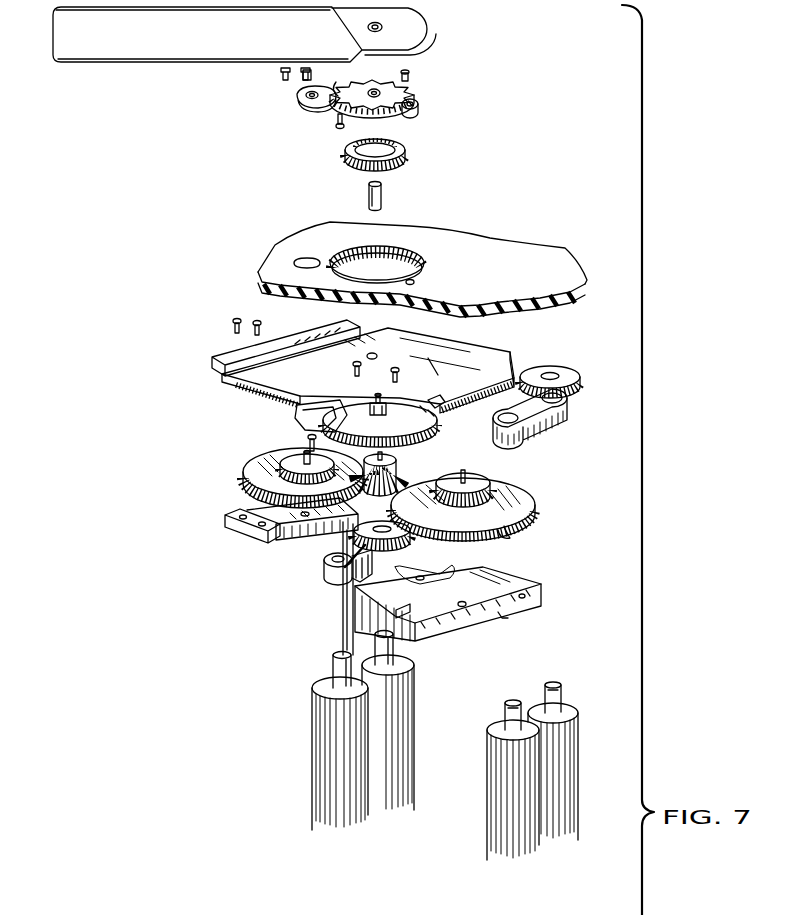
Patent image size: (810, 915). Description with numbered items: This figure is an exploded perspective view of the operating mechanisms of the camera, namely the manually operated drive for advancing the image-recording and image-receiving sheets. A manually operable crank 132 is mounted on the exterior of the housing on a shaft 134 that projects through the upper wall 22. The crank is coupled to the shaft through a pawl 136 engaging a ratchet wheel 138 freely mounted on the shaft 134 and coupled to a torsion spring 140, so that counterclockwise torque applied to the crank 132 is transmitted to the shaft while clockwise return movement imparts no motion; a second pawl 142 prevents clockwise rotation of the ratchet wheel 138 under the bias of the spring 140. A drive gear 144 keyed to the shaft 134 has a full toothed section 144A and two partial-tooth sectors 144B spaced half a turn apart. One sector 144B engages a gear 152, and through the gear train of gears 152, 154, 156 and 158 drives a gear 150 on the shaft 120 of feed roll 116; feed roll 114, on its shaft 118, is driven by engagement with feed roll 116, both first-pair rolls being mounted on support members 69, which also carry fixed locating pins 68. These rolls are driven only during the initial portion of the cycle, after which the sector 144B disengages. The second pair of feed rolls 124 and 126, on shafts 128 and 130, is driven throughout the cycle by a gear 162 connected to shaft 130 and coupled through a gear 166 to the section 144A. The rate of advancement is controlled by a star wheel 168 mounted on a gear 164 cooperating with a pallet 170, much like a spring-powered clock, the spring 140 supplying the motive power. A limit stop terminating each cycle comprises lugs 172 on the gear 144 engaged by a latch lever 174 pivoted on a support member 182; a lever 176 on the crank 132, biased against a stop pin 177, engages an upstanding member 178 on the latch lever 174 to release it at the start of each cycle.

The upper wall 22 is at (521, 257).
The locating pins 68 is at (367, 573).
The support member 69 is at (340, 568).
The feed roll 114 is at (322, 800).
The feed roll 116 is at (414, 770).
The shaft 118 is at (333, 655).
The shaft 120 is at (380, 637).
The feed roll 124 is at (501, 812).
The feed roll 126 is at (556, 792).
The shaft 128 is at (509, 700).
The shaft 130 is at (553, 683).
The crank 132 is at (108, 64).
The shaft 134 is at (385, 196).
The pawl 136 is at (340, 76).
The ratchet wheel 138 is at (397, 95).
The torsion spring 140 is at (405, 160).
The second pawl 142 is at (420, 115).
The drive gear 144 is at (436, 424).
The 360° section 144A is at (312, 447).
The sectors 144B is at (430, 403).
The gear 150 is at (353, 545).
The gear 152 is at (290, 463).
The gear 154 is at (258, 472).
The gear 156 is at (384, 462).
The gear 158 is at (395, 517).
The gear 162 is at (566, 388).
The gear 164 is at (528, 518).
The gear 166 is at (490, 486).
The star wheel 168 is at (506, 536).
The pallet 170 is at (455, 590).
The lugs 172 is at (353, 378).
The latch lever 174 is at (295, 414).
The lever 176 is at (280, 88).
The stop pin 177 is at (320, 74).
The upstanding member 178 is at (258, 386).
The support member 182 is at (228, 356).